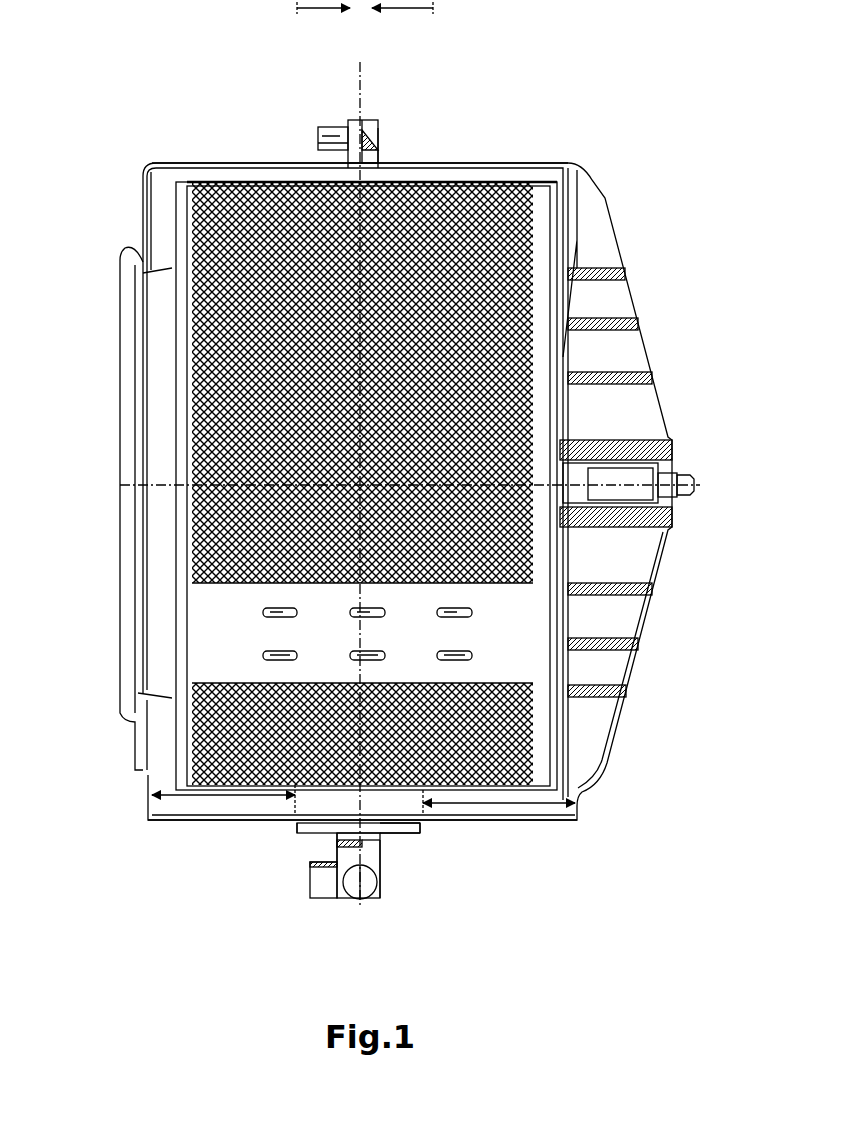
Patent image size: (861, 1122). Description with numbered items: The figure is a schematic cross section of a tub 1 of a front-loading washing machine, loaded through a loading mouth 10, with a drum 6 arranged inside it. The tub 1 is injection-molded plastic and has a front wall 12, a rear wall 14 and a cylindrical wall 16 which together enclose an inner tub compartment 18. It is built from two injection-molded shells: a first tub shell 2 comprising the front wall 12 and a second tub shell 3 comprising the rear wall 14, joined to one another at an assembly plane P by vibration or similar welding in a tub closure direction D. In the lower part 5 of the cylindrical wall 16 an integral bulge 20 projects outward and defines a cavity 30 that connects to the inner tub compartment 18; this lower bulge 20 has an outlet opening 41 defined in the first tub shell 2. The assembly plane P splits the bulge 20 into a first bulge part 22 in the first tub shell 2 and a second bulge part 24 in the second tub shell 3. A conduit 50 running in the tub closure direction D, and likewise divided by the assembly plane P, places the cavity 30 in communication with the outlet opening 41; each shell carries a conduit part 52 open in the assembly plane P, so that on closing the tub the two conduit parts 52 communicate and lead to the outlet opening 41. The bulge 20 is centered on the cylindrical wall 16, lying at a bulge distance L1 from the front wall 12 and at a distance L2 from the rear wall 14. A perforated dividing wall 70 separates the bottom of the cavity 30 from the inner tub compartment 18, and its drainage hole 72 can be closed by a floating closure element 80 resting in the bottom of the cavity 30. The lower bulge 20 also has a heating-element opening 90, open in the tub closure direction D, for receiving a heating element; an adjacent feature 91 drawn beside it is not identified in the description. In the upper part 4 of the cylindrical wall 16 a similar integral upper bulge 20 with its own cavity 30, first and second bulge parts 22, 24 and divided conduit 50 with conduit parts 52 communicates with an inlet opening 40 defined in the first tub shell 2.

The tub 1 is at (633, 249).
The first tub shell 2 is at (217, 162).
The second tub shell 3 is at (573, 163).
The upper part of the cylindrical wall 4 is at (217, 160).
The lower part of the cylindrical wall 5 is at (270, 816).
The drum 6 is at (505, 182).
The loading mouth 10 is at (122, 460).
The front wall 12 is at (143, 222).
The rear wall 14 is at (617, 322).
The cylindrical wall 16 is at (445, 162).
The inner tub compartment 18 is at (167, 180).
The bulge 20 is at (347, 118).
The first bulge part 22 is at (337, 137).
The second bulge part 24 is at (373, 143).
The cavity 30 is at (380, 143).
The inlet opening 40 is at (250, 158).
The outlet opening 41 is at (310, 894).
The conduit 50 is at (320, 137).
The conduit part 52 is at (380, 147).
The perforated dividing wall 70 is at (372, 838).
The drainage hole 72 is at (337, 862).
The floating closure element 80 is at (363, 133).
The heating-element opening 90 is at (420, 828).
The flange edge 91 is at (407, 834).
The assembly plane P is at (362, 475).
The tub closure direction D is at (365, 9).
The bulge distance from the front wall L1 is at (223, 800).
The distance from the rear wall L2 is at (499, 802).